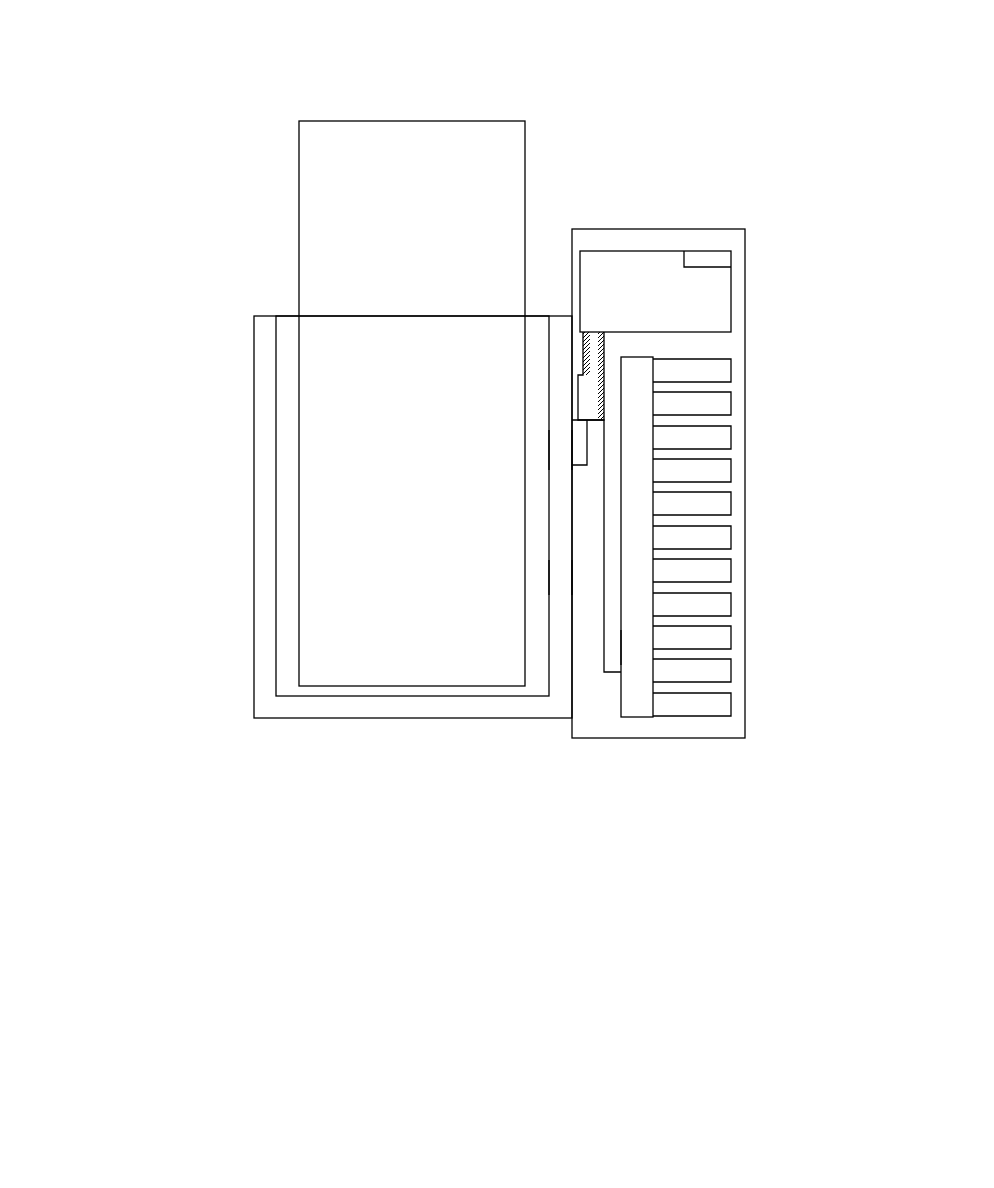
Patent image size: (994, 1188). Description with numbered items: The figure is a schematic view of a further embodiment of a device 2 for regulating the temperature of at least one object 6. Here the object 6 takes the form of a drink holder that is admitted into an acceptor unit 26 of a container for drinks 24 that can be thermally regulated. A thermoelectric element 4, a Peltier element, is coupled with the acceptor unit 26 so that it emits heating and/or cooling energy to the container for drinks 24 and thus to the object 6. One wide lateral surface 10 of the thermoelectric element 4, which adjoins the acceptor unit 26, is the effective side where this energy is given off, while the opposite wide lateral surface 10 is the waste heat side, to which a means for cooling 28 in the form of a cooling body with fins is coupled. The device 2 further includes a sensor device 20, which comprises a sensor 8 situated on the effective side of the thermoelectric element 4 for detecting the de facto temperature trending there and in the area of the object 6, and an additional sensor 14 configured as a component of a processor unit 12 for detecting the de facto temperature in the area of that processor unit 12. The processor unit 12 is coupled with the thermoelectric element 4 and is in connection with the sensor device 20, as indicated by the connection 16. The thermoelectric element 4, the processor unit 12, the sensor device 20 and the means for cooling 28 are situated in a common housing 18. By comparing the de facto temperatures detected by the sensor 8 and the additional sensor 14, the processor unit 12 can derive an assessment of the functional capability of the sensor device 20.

The device for regulating the temperature of at least one object 2 is at (338, 806).
The thermoelectric element 4 is at (585, 672).
The object 6 is at (357, 120).
The sensor 8 is at (573, 447).
The wide lateral surface 10 is at (573, 577).
The processor unit 12 is at (653, 252).
The additional sensor 14 is at (713, 252).
The connection between processor unit and sensor device 16 is at (605, 345).
The housing 18 is at (692, 738).
The sensor device 20 is at (487, 337).
The container for drinks 24 is at (158, 302).
The acceptor unit 26 is at (268, 315).
The means for cooling 28 is at (731, 437).